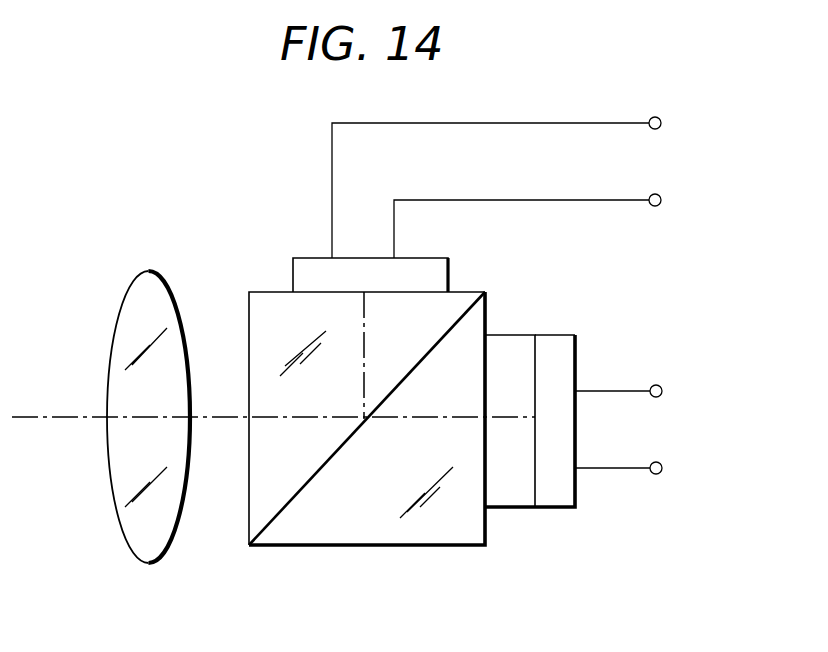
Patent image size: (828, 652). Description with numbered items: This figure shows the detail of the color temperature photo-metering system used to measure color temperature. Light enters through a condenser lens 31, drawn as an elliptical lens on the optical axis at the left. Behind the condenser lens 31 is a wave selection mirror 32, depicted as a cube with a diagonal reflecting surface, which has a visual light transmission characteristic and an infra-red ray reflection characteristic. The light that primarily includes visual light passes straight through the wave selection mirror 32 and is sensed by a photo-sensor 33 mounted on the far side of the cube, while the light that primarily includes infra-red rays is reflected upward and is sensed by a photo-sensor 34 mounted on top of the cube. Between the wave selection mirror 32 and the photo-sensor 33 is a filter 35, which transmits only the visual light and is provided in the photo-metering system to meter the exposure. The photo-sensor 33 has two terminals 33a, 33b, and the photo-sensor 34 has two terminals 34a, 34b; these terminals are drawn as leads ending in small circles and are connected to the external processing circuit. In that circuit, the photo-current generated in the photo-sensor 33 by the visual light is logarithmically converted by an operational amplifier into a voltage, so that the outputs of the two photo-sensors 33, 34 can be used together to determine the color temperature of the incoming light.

The condenser lens 31 is at (148, 553).
The wave selection mirror 32 is at (283, 509).
The photo-sensor 33 is at (553, 498).
The terminal 33a is at (645, 392).
The terminal 33b is at (646, 469).
The photo-sensor 34 is at (312, 270).
The terminal 34a is at (524, 183).
The terminal 34b is at (555, 222).
The filter 35 is at (509, 493).